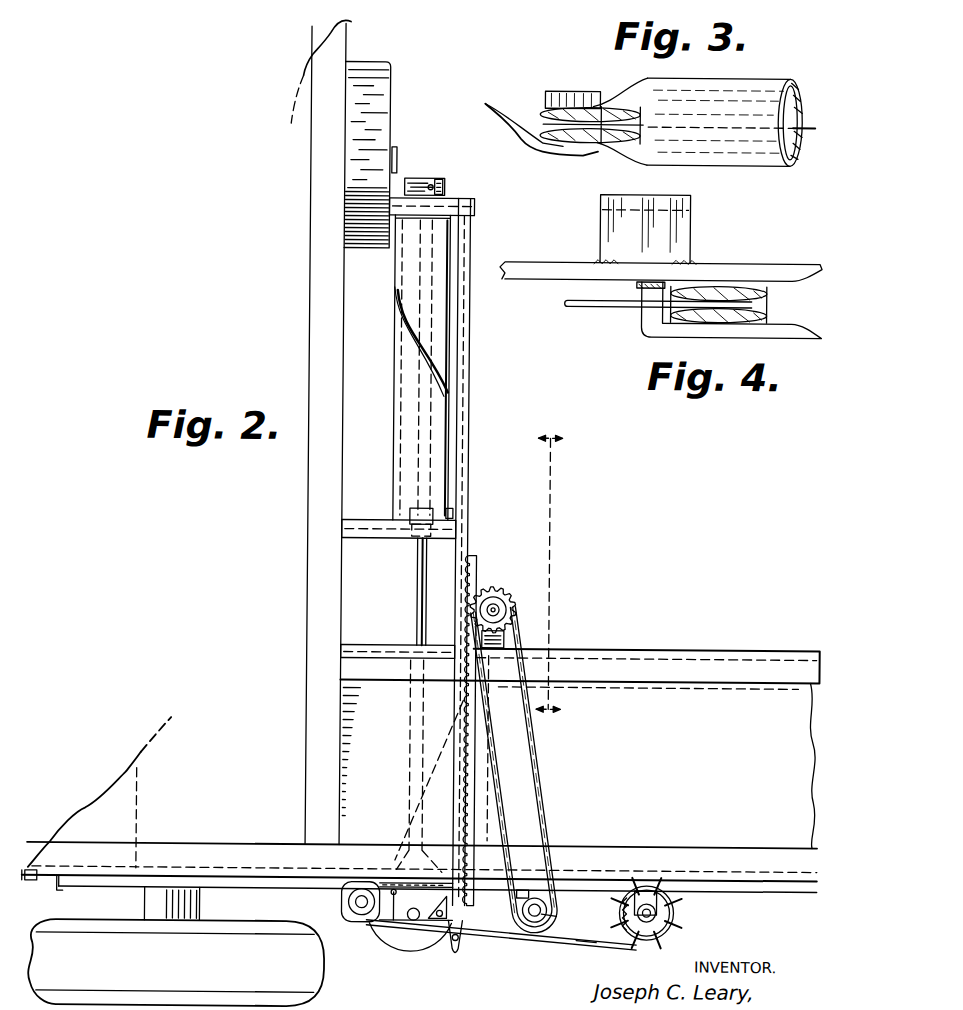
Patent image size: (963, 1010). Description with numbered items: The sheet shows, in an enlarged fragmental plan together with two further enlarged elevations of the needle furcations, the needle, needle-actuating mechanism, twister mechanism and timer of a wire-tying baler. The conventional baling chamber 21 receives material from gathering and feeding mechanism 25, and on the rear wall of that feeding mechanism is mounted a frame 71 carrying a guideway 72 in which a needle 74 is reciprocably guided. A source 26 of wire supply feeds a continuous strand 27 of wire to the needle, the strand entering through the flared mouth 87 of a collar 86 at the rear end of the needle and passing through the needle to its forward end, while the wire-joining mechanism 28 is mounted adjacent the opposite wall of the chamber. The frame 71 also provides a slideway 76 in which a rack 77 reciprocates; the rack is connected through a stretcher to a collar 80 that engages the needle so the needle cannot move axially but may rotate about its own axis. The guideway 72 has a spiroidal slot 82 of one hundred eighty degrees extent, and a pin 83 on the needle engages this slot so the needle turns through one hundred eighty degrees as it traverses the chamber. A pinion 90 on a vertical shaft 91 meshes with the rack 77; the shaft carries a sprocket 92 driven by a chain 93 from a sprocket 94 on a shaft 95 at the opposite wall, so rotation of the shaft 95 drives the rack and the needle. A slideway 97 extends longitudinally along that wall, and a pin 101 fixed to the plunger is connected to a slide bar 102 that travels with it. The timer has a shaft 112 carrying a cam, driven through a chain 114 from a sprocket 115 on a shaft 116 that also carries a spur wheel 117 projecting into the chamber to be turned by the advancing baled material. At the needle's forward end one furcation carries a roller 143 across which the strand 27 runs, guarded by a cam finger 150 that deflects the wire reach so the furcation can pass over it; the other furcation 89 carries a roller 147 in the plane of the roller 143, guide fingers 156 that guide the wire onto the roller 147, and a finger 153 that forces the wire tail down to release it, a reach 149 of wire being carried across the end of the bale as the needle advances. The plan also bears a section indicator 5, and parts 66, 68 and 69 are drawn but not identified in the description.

In FIG. 2, the section line 5- 5 is at (549, 573).
In FIG. 2, the baling chamber 21 is at (767, 650).
In FIG. 2, the gathering and feeding mechanism 25 is at (340, 37).
In FIG. 2, the source of wire supply 26 is at (377, 70).
In FIG. 2, the strand of wire 27 is at (427, 184).
In FIG. 3, the strand of wire 27 is at (805, 122).
In FIG. 2, the wire-joining mechanism 28 is at (432, 952).
In FIG. 2, the bar 66 is at (463, 933).
In FIG. 3, the tube 68 is at (753, 80).
In FIG. 4, the plate 69 is at (546, 261).
In FIG. 2, the frame 71 is at (470, 405).
In FIG. 2, the guideway 72 is at (400, 428).
In FIG. 2, the needle 74 is at (418, 602).
In FIG. 2, the slideway 76 is at (462, 627).
In FIG. 2, the rack 77 is at (470, 792).
In FIG. 2, the collar 80 is at (410, 510).
In FIG. 2, the spiroidal slot 82 is at (412, 342).
In FIG. 2, the pin 83 is at (453, 512).
In FIG. 2, the collar 86 is at (444, 188).
In FIG. 2, the flared mouth 87 is at (440, 180).
In FIG. 2, the needle furcation 89 is at (372, 924).
In FIG. 2, the pinion 90 is at (500, 593).
In FIG. 2, the shaft 91 is at (501, 604).
In FIG. 2, the sprocket 92 is at (506, 632).
In FIG. 2, the chain 93 is at (533, 762).
In FIG. 2, the sprocket 94 is at (556, 911).
In FIG. 2, the shaft 95 is at (537, 921).
In FIG. 2, the slideway 97 is at (300, 886).
In FIG. 2, the pin 101 is at (36, 884).
In FIG. 2, the slide bar 102 is at (62, 890).
In FIG. 2, the shaft 112 is at (348, 906).
In FIG. 2, the chain 114 is at (577, 939).
In FIG. 2, the sprocket 115 is at (620, 921).
In FIG. 2, the shaft 116 is at (678, 903).
In FIG. 2, the spur wheel 117 is at (675, 921).
In FIG. 3, the roller 143 is at (608, 107).
In FIG. 4, the roller 147 is at (740, 287).
In FIG. 4, the reach 149 is at (604, 307).
In FIG. 3, the cam finger 150 is at (500, 120).
In FIG. 4, the finger 153 is at (690, 203).
In FIG. 4, the guide fingers 156 is at (818, 275).